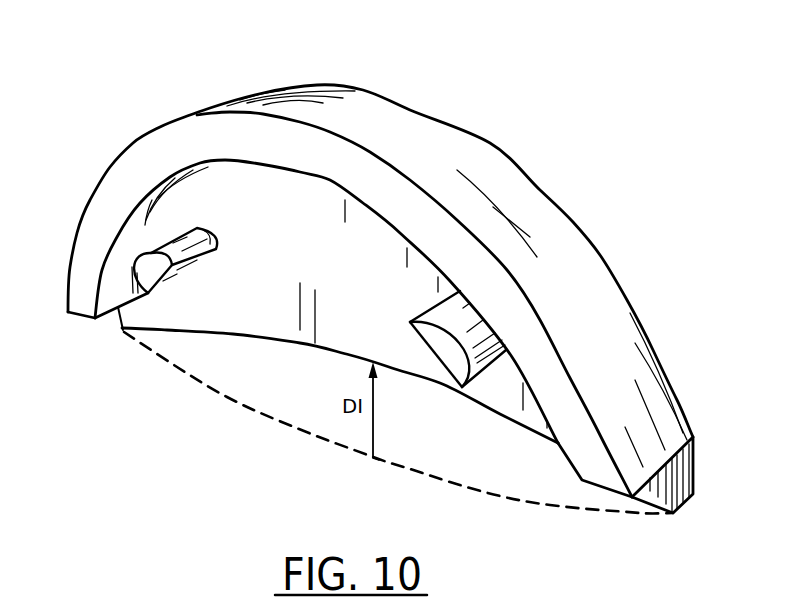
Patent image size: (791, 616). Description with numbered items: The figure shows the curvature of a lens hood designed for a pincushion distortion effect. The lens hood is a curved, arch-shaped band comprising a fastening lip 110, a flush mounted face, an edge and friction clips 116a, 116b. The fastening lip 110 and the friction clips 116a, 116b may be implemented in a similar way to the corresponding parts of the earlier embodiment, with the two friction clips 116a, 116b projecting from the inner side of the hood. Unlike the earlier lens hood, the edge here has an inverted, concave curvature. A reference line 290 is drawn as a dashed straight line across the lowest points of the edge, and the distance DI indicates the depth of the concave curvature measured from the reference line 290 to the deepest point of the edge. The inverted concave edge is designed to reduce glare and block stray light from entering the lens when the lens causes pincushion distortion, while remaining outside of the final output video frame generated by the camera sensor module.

The fastening lip 110 is at (82, 218).
The friction clip 116a is at (203, 264).
The friction clip 116b is at (428, 352).
The reference line 290 is at (286, 423).